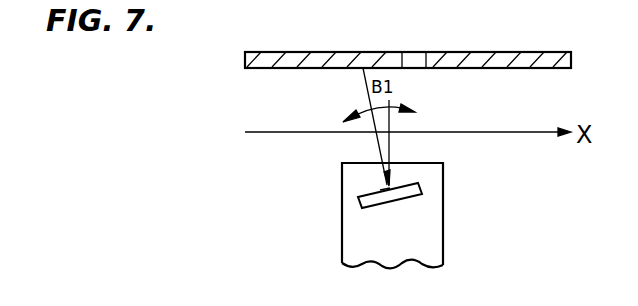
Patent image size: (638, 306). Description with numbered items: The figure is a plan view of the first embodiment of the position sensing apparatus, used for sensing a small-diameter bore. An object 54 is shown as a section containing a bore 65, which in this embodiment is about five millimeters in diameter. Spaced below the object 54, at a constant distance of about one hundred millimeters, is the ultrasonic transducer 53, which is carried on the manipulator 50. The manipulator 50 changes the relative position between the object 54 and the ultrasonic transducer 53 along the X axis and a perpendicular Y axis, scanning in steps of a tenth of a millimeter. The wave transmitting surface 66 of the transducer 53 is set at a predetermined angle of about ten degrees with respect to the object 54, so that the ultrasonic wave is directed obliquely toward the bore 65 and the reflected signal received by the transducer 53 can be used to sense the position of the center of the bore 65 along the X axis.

The manipulator 50 is at (430, 240).
The ultrasonic transducer 53 is at (421, 189).
The object 54 is at (497, 52).
The bore 65 is at (410, 56).
The wave transmitting surface 66 is at (383, 191).